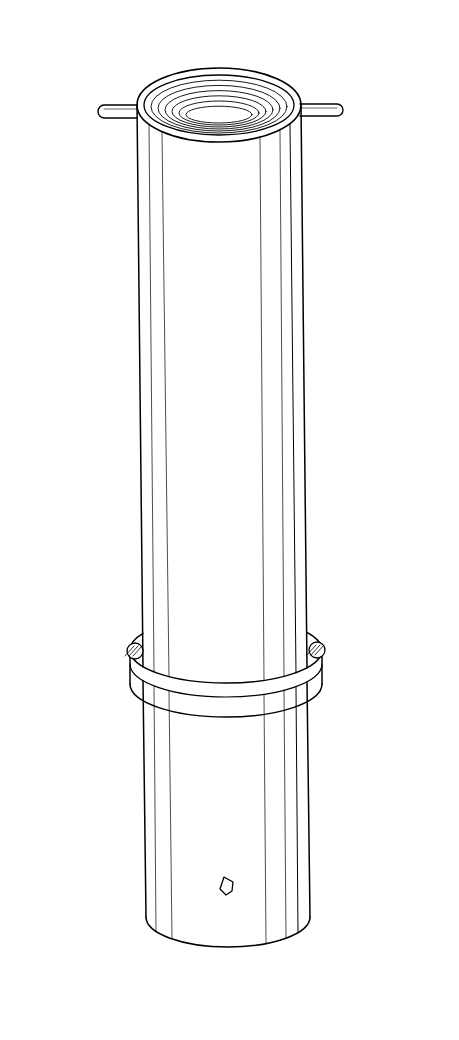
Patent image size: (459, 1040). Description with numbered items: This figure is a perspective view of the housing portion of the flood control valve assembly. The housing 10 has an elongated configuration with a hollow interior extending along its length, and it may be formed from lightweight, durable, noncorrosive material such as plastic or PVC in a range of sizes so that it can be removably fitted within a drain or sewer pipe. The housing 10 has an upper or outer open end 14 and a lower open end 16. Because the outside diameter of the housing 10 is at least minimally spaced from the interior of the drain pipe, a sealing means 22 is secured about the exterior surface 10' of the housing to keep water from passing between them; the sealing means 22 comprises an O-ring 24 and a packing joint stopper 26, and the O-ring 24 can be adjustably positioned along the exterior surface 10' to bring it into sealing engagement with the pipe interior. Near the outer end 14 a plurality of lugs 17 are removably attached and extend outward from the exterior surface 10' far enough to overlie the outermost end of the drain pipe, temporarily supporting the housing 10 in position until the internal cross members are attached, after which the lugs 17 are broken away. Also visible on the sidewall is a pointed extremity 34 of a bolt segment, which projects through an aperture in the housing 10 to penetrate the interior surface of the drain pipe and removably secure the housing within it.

The housing 10 is at (232, 530).
The exterior surface 10' is at (264, 524).
The upper or outer open end 14 is at (245, 71).
The lugs 17 is at (106, 110).
The sealing means 22 is at (108, 677).
The O-ring 24 is at (128, 645).
The packing joint stopper 26 is at (323, 668).
The pointed extremity 34 is at (134, 851).
The lower open end 16 is at (292, 931).